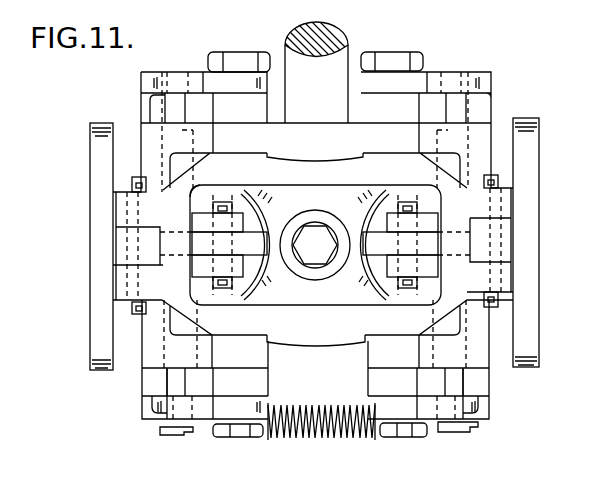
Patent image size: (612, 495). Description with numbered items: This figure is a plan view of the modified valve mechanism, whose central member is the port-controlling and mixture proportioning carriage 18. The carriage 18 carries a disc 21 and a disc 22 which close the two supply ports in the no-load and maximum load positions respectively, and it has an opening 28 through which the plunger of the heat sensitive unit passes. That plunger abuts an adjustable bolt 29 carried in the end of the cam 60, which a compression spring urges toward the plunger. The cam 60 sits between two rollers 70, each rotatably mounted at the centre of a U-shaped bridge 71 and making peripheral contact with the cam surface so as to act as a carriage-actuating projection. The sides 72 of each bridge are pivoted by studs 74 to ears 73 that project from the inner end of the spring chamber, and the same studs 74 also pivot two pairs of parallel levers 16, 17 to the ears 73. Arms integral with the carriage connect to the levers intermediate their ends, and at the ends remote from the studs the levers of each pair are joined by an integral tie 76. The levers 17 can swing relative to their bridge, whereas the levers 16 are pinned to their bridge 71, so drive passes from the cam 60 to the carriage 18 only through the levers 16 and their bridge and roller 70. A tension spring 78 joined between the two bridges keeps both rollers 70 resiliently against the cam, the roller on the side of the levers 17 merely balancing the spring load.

The levers 16 is at (390, 142).
The levers 17 is at (248, 143).
The carriage 18 is at (315, 247).
The disc 21 is at (92, 293).
The disc 22 is at (535, 280).
The opening 28 is at (210, 192).
The adjustable bolt 29 is at (315, 240).
The cam 60 is at (320, 235).
The rollers 70 is at (315, 246).
The U-shaped bridge 71 is at (150, 383).
The sides 72 is at (202, 435).
The ears 73 is at (315, 210).
The studs 74 is at (252, 52).
The tie 76 is at (155, 358).
The tension spring 78 is at (323, 440).